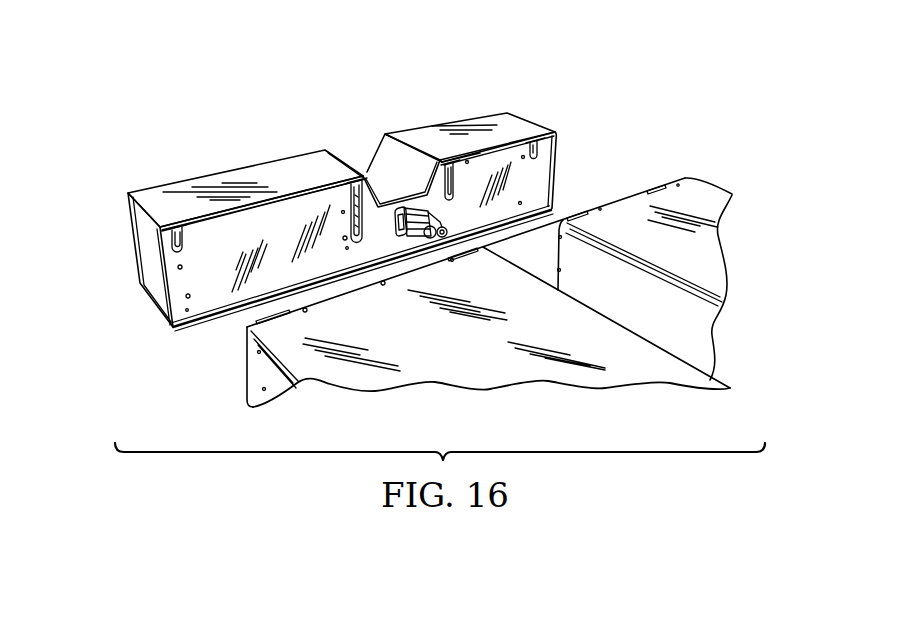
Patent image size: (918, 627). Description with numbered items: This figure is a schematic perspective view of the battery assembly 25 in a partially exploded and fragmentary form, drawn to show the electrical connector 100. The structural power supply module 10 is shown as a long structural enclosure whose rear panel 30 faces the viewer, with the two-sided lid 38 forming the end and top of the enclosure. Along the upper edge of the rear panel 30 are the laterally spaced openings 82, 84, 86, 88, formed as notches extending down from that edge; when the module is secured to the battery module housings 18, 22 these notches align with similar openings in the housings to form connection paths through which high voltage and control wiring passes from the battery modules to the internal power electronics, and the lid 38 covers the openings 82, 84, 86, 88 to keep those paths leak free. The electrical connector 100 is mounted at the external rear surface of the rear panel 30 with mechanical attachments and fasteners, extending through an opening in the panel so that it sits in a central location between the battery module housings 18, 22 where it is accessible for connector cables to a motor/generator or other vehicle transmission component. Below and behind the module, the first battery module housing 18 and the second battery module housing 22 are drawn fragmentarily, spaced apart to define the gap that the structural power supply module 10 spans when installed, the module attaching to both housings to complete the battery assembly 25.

The structural power supply module 10 is at (557, 172).
The battery module housing 18 is at (447, 348).
The battery module housing 22 is at (697, 197).
The battery assembly 25 is at (670, 101).
The rear panel 30 is at (218, 297).
The lid 38 is at (143, 247).
The opening 82 is at (174, 234).
The opening 84 is at (532, 140).
The opening 86 is at (352, 176).
The opening 88 is at (448, 162).
The electrical connector 100 is at (445, 214).